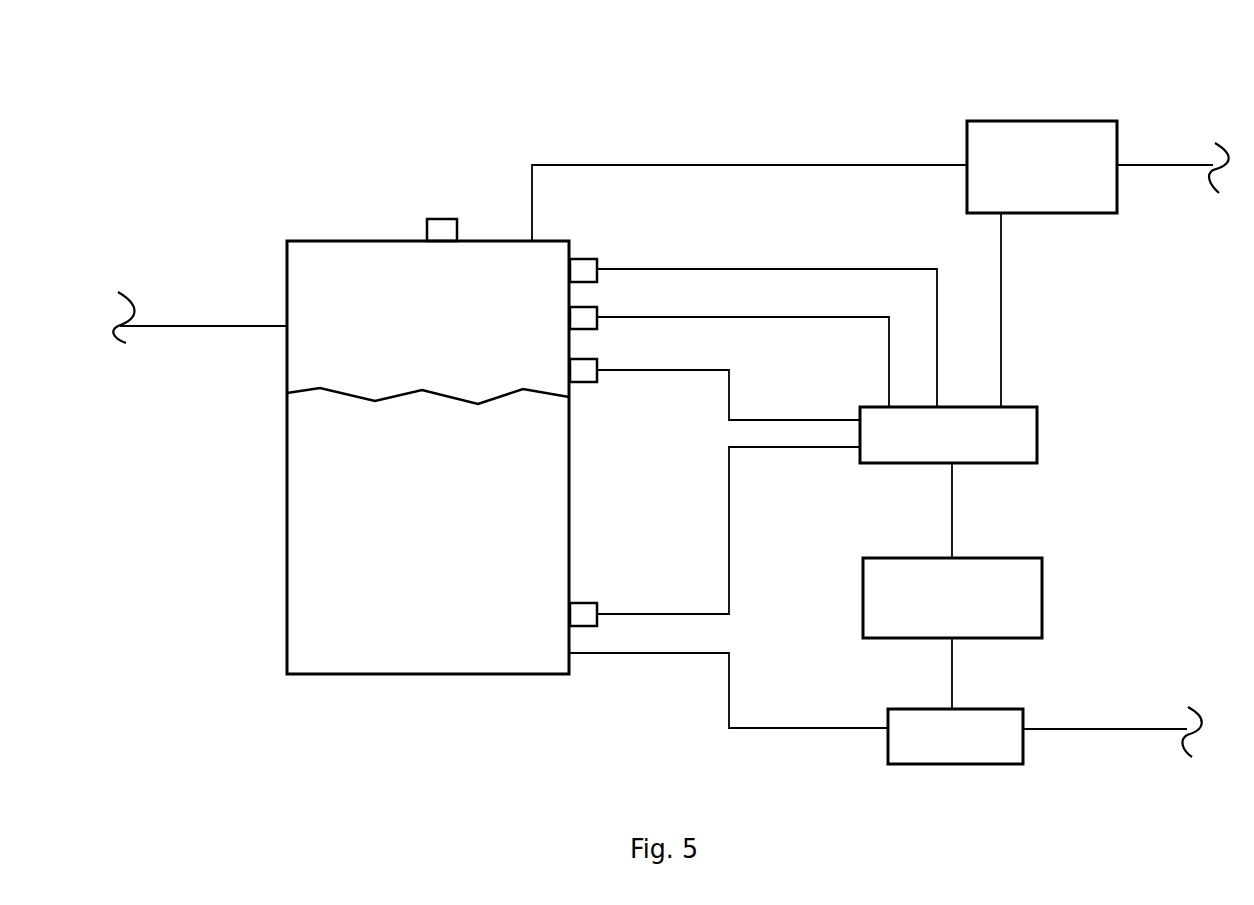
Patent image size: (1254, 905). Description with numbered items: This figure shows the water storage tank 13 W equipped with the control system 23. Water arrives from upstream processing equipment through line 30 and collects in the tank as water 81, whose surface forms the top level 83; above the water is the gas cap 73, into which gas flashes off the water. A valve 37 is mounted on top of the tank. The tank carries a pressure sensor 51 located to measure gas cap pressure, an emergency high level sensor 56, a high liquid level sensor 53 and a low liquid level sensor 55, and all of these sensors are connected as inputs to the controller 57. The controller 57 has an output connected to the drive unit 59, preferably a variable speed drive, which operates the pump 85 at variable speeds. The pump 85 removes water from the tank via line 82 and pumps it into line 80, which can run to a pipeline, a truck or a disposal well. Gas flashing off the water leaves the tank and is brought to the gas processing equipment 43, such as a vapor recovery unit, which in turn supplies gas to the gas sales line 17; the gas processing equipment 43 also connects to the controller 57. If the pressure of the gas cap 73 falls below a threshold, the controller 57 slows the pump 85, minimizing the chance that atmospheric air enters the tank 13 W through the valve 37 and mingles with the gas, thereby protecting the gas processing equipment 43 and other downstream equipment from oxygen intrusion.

The water storage tank 13 is at (325, 240).
The valve 37 is at (441, 218).
The gas cap 73 is at (432, 325).
The water 81 is at (432, 550).
The top level 83 is at (310, 390).
The line 30 is at (217, 325).
The pressure sensor 51 is at (590, 258).
The emergency high level sensor 56 is at (598, 307).
The high liquid level sensor 53 is at (590, 383).
The low liquid level sensor 55 is at (598, 602).
The line 82 is at (725, 694).
The gas processing equipment 43 is at (1023, 121).
The gas sales line 17 is at (1152, 165).
The controller 57 is at (1038, 433).
The control system 23 is at (1055, 395).
The drive unit 59 is at (1043, 587).
The pump 85 is at (990, 765).
The line 80 is at (1082, 727).